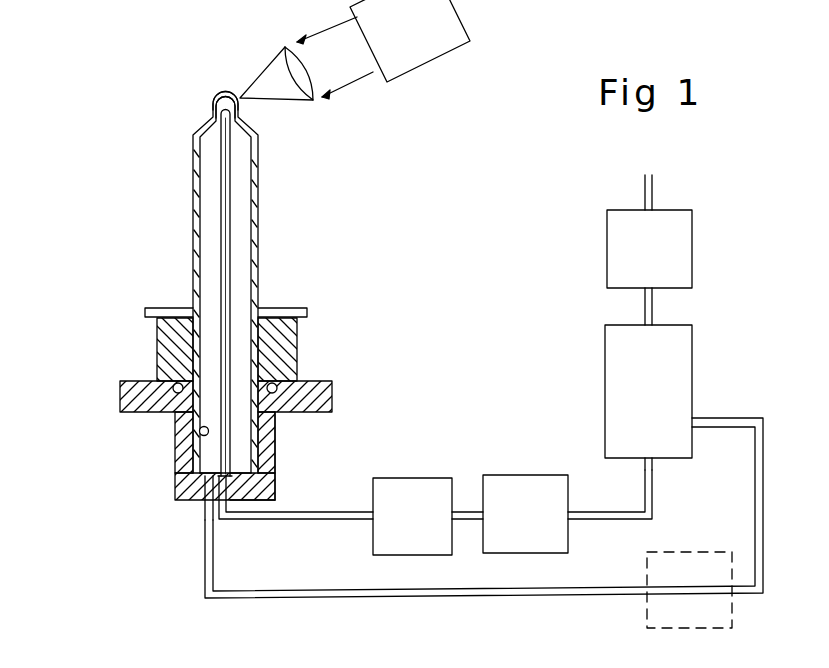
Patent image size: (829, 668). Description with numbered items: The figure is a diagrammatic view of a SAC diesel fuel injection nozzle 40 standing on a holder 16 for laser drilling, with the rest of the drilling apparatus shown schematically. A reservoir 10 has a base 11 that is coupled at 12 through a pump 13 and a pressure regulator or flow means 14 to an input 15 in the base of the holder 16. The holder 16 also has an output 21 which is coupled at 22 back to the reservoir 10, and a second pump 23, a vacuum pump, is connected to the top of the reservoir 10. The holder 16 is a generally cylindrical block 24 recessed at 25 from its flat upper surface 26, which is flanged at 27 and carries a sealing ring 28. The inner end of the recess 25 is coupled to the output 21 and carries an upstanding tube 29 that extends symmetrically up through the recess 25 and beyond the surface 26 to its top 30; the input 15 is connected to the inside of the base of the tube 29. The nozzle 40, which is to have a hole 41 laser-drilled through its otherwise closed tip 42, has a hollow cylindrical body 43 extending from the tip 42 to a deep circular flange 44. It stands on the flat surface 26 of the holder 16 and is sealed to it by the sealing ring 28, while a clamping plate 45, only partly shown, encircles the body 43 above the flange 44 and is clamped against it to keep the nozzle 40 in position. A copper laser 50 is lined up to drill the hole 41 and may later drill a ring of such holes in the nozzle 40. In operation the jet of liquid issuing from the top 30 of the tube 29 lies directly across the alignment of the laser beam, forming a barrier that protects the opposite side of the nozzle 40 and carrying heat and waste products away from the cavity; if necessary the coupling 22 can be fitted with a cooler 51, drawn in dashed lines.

The reservoir 10 is at (648, 391).
The base 11 is at (673, 460).
The coupling 12 is at (587, 518).
The pump 13 is at (525, 514).
The pressure regulator or flow means 14 is at (412, 516).
The input 15 is at (230, 504).
The holder 16 is at (277, 457).
The output 21 is at (205, 500).
The coupling 22 is at (427, 597).
The second pump 23 is at (649, 250).
The cylindrical block 24 is at (185, 463).
The recess 25 is at (199, 431).
The flat upper surface 26 is at (183, 380).
The flange 27 is at (120, 397).
The sealing ring 28 is at (280, 386).
The tube 29 is at (228, 427).
The top 30 is at (215, 117).
The diesel fuel injection nozzle 40 is at (258, 212).
The hole 41 is at (240, 98).
The tip 42 is at (215, 102).
The hollow cylindrical body 43 is at (200, 210).
The flange 44 is at (297, 345).
The clamping plate 45 is at (165, 307).
The laser 50 is at (410, 41).
The cooler 51 is at (689, 590).